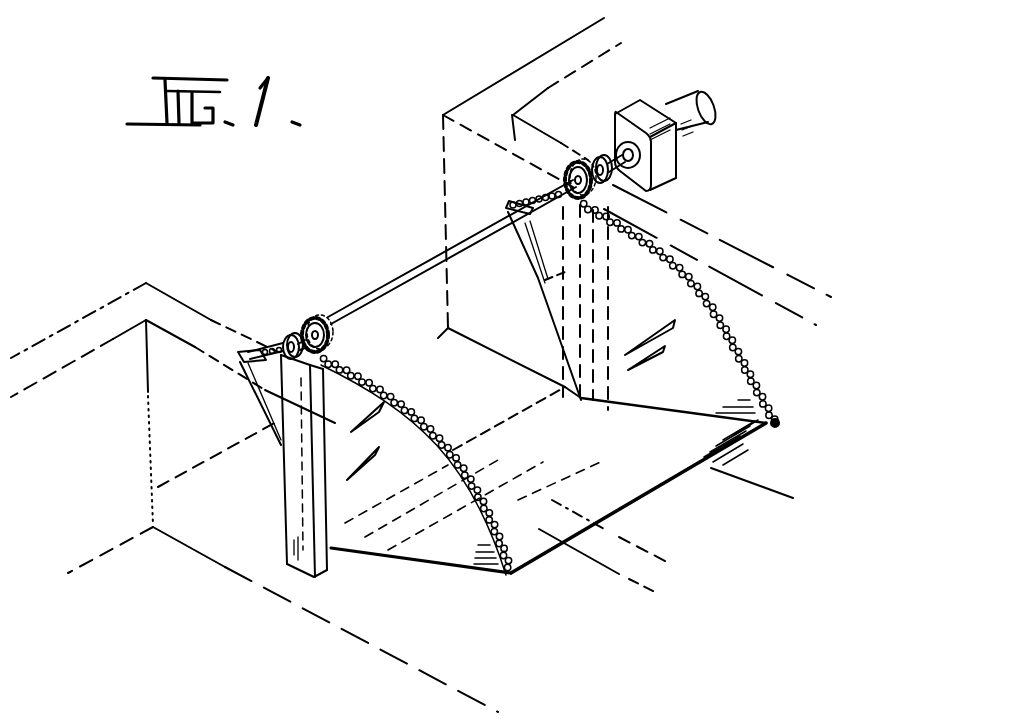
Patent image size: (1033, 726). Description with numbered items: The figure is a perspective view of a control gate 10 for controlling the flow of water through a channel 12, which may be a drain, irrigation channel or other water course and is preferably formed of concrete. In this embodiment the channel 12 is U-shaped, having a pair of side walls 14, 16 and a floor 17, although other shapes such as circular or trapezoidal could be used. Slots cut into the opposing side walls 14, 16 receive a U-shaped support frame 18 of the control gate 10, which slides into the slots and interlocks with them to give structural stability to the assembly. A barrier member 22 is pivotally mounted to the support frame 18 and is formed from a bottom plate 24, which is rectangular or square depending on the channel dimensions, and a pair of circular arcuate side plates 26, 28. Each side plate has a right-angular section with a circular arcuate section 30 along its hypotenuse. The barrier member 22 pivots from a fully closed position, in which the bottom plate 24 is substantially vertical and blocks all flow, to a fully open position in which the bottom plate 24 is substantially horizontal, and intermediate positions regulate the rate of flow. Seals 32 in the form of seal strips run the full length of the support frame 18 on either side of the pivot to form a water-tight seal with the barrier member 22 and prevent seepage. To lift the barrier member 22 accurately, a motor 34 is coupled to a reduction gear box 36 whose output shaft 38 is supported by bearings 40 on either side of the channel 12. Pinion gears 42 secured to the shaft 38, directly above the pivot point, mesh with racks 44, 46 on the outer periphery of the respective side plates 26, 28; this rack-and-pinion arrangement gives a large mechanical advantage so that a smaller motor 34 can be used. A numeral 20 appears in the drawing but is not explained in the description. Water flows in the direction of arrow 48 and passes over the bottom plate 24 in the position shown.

The control gate 10 is at (573, 567).
The channel 12 is at (447, 227).
The side wall 14 is at (147, 293).
The side wall 16 is at (517, 133).
The floor 17 is at (777, 503).
The support frame 18 is at (293, 498).
The bottom plate 20 is at (347, 560).
The barrier member 22 is at (795, 410).
The bottom plate 24 is at (640, 507).
The side plate 26 is at (400, 543).
The side plate 28 is at (653, 312).
The circular arcuate section 30 is at (490, 570).
The seals 32 is at (530, 413).
The motor 34 is at (717, 110).
The reduction gear box 36 is at (645, 113).
The output shaft 38 is at (393, 285).
The bearings 40 is at (605, 158).
The pinion gears 42 is at (563, 160).
The rack 44 is at (705, 277).
The rack 46 is at (433, 420).
The arrow 48 is at (320, 220).